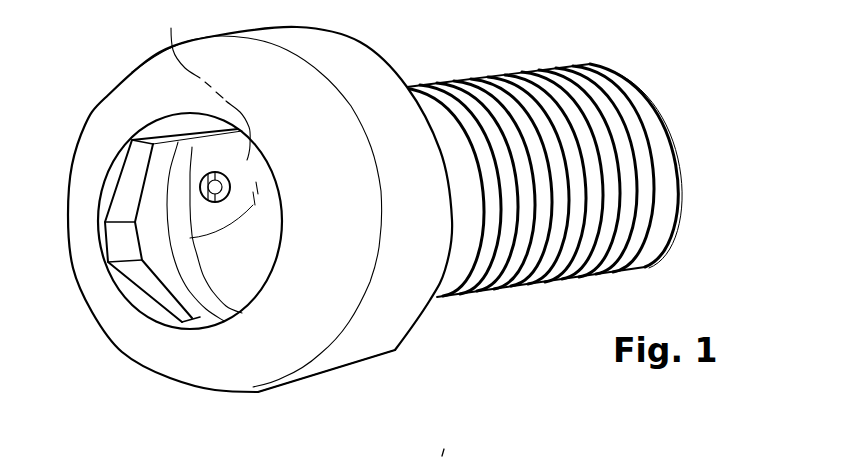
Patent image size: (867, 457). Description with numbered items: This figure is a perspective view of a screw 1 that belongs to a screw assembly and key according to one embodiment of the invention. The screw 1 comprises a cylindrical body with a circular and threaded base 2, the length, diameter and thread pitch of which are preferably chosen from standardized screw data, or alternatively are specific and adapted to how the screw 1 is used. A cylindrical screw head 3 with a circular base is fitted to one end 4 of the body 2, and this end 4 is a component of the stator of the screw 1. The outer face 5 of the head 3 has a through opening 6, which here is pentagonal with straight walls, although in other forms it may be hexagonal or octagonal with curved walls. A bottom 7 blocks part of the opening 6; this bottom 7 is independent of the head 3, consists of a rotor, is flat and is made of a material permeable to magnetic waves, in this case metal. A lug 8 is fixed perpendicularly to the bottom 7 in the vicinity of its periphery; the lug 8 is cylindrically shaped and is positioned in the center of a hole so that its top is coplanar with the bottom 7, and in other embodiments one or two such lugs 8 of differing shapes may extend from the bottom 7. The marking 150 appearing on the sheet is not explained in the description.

The screw 1 is at (411, 228).
The threaded base 2 is at (627, 178).
The screw head 3 is at (392, 314).
The end 4 is at (441, 337).
The outer face 5 is at (242, 352).
The through opening 6 is at (171, 295).
The bottom 7 is at (253, 247).
The lug 8 is at (205, 189).
The reference marker 150 is at (446, 440).